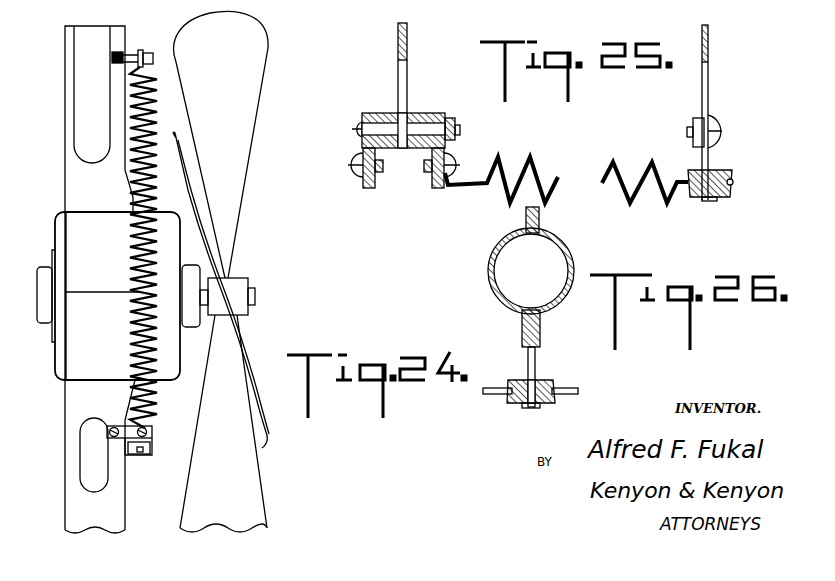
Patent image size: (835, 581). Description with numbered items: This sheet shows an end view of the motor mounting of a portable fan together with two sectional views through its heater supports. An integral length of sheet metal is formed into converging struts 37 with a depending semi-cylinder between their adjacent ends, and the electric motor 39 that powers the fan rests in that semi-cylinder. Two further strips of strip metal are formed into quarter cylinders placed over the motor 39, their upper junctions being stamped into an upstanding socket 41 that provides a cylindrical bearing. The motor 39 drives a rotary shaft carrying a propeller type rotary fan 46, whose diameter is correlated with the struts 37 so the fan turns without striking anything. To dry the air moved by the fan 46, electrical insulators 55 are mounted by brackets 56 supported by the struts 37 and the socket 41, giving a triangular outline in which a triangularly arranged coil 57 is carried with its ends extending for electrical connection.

In FIG. 24, the converging struts 37 is at (72, 455).
In FIG. 25, the converging struts 37 is at (400, 43).
In FIG. 24, the electric motor 39 is at (168, 367).
In FIG. 24, the upstanding socket 41 is at (82, 117).
In FIG. 26, the upstanding socket 41 is at (572, 240).
In FIG. 24, the propeller type rotary fan 46 is at (235, 188).
In FIG. 24, the electrical insulators 55 is at (148, 52).
In FIG. 25, the electrical insulators 55 is at (427, 112).
In FIG. 26, the electrical insulators 55 is at (542, 400).
In FIG. 24, the brackets 56 is at (128, 55).
In FIG. 25, the brackets 56 is at (708, 157).
In FIG. 26, the brackets 56 is at (530, 360).
In FIG. 24, the triangularly arranged coil 57 is at (135, 256).
In FIG. 25, the triangularly arranged coil 57 is at (603, 181).
In FIG. 26, the triangularly arranged coil 57 is at (490, 393).